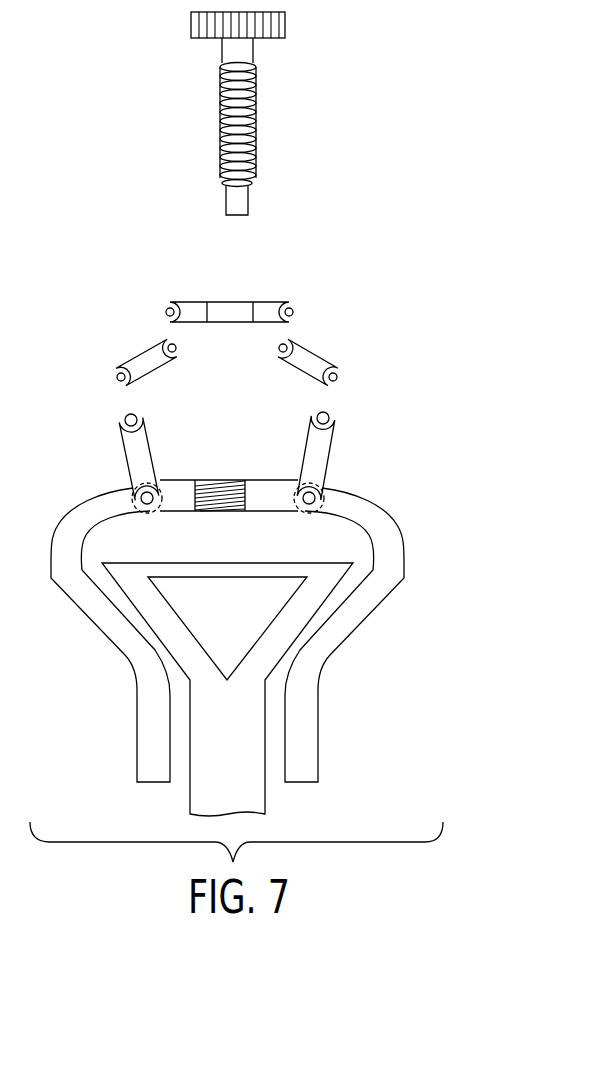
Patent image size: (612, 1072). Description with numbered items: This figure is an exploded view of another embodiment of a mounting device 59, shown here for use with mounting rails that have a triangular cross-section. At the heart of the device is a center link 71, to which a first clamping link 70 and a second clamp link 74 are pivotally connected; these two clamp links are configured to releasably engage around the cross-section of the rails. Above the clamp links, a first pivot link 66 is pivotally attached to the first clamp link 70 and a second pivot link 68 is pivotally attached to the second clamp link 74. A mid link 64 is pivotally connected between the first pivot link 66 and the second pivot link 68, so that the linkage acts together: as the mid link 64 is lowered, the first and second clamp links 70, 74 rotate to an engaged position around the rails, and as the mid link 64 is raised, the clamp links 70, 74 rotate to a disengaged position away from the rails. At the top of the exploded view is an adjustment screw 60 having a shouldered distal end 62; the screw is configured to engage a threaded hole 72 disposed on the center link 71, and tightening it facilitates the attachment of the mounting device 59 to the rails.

The mounting device 59 is at (431, 440).
The adjustment screw 60 is at (258, 113).
The shouldered distal end 62 is at (257, 205).
The mid link 64 is at (253, 297).
The first pivot link 66 is at (114, 360).
The second pivot link 68 is at (314, 357).
The first clamping link 70 is at (128, 460).
The center link 71 is at (188, 478).
The threaded hole 72 is at (228, 480).
The second clamp link 74 is at (410, 546).